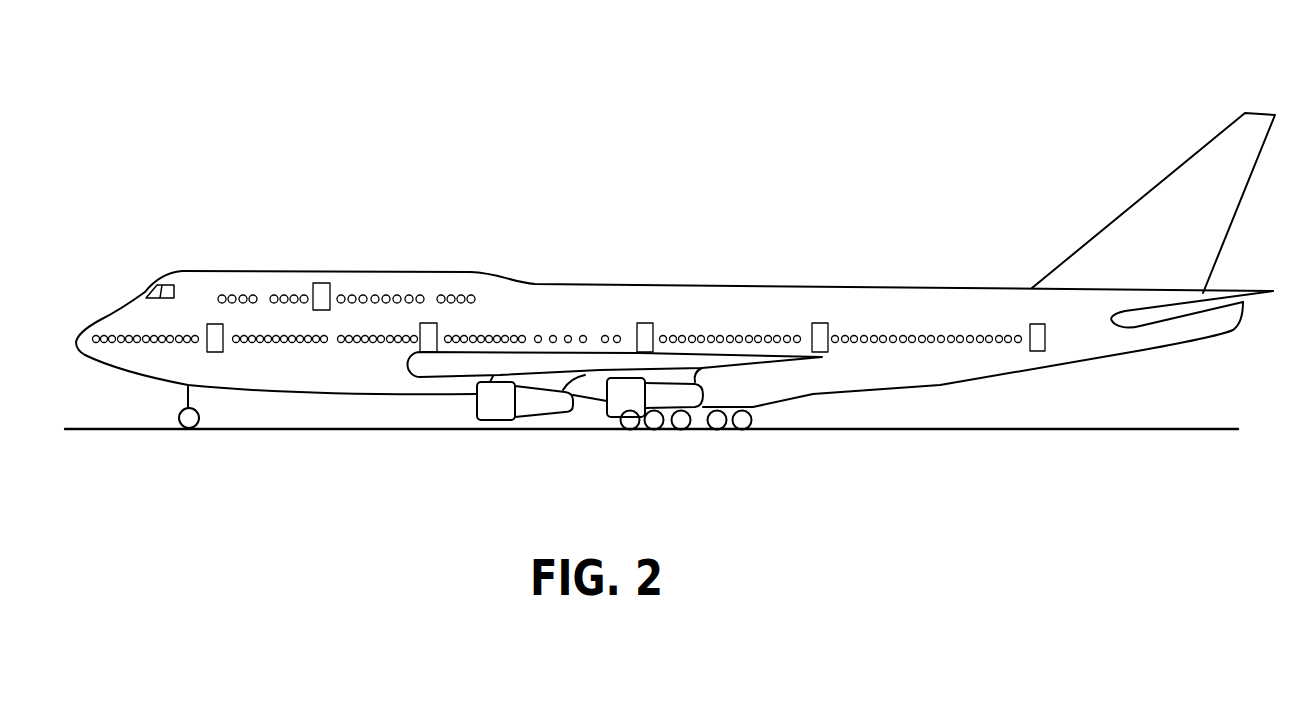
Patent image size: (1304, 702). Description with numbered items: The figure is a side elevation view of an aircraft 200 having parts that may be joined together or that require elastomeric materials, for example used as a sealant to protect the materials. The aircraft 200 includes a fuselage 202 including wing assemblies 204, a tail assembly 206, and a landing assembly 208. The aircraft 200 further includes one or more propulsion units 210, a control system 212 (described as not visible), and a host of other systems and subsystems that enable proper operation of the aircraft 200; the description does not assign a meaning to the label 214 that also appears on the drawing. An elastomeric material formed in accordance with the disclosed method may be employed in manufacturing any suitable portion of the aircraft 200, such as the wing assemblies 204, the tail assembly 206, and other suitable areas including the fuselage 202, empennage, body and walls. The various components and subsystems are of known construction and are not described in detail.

The aircraft 200 is at (137, 88).
The fuselage 202 is at (853, 395).
The wing assemblies 204 is at (435, 365).
The tail assembly 206 is at (1094, 213).
The landing assembly 208 is at (683, 447).
The propulsion units 210 is at (500, 420).
The control system 212 is at (92, 380).
The aircraft body 214 is at (457, 217).